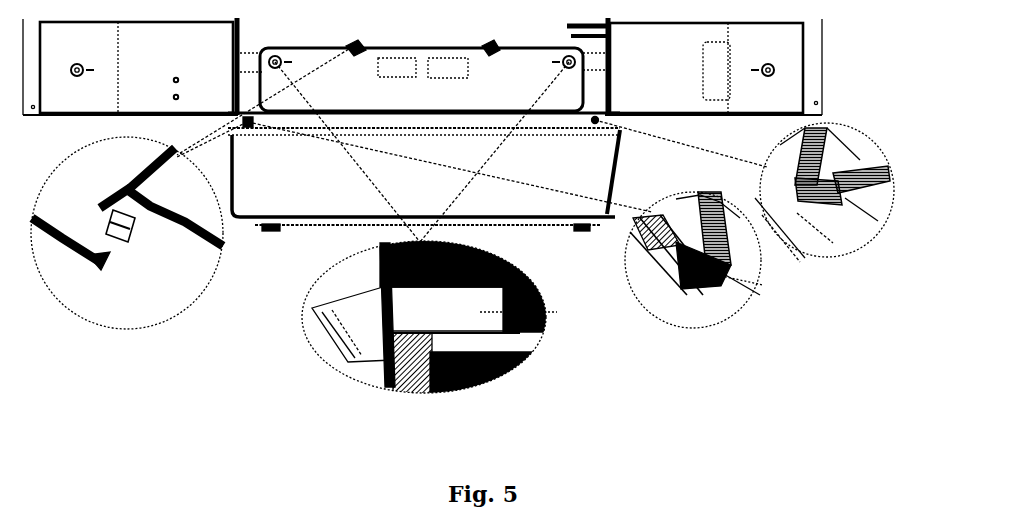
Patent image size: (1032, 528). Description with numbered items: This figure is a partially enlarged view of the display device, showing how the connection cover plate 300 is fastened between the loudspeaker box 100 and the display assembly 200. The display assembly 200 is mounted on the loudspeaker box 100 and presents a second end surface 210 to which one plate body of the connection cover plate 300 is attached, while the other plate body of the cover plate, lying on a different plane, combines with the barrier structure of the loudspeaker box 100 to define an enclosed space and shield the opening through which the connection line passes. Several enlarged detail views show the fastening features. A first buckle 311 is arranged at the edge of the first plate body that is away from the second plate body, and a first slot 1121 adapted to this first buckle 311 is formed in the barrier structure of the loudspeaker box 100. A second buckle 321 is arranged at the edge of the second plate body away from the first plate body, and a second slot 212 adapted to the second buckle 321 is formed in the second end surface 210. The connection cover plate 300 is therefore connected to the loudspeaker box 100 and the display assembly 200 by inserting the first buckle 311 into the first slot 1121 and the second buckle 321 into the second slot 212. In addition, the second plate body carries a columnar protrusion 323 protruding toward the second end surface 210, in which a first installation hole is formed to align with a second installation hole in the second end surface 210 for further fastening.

The loudspeaker box 100 is at (587, 157).
The display assembly 200 is at (808, 52).
The connection cover plate 300 is at (212, 217).
The second end surface 210 is at (94, 224).
The second slot 212 is at (120, 235).
The second buckle 321 is at (102, 262).
The columnar protrusion 323 is at (453, 337).
The first buckle 311 is at (720, 202).
The first slot 1121 is at (675, 250).